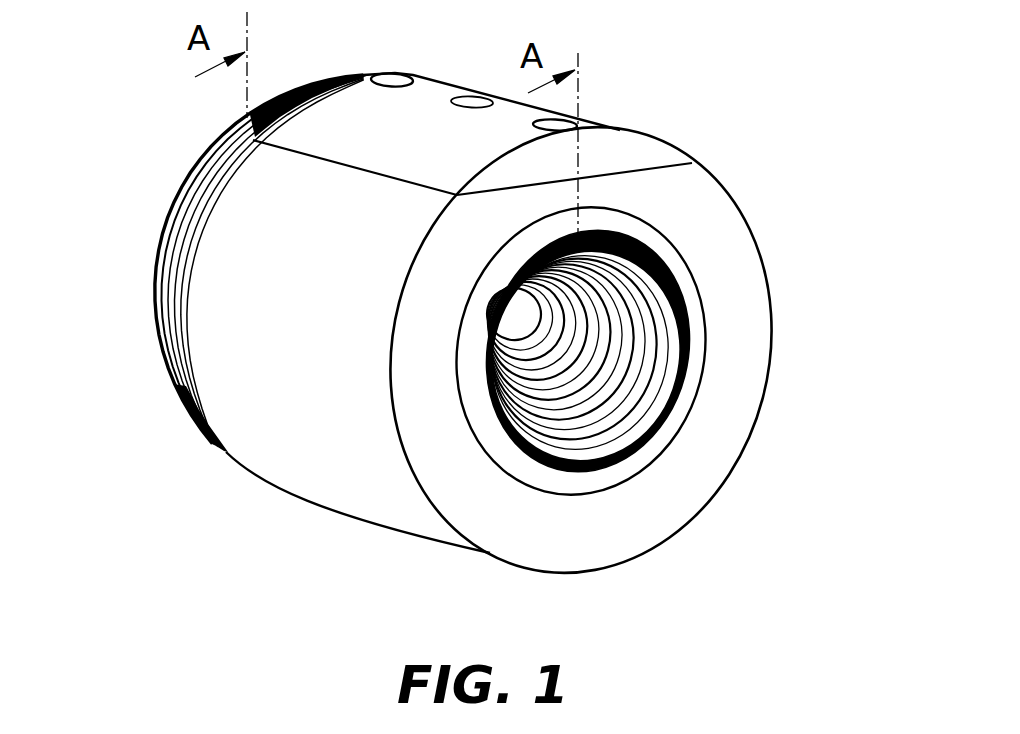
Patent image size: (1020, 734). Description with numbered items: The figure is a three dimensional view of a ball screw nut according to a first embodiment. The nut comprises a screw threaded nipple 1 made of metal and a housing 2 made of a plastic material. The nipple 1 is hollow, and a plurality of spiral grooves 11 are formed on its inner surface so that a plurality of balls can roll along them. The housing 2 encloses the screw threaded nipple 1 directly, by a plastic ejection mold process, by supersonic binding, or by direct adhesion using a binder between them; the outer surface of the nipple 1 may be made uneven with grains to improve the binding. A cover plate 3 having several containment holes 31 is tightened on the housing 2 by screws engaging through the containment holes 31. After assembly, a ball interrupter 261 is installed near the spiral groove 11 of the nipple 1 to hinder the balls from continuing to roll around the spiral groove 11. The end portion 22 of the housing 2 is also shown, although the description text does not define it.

The screw threaded nipple 1 is at (687, 282).
The spiral grooves 11 is at (650, 367).
The housing 2 is at (693, 493).
The chamfered end 22 is at (183, 400).
The ball interrupter 261 is at (622, 262).
The cover plate 3 is at (620, 150).
The containment holes 31 is at (466, 98).